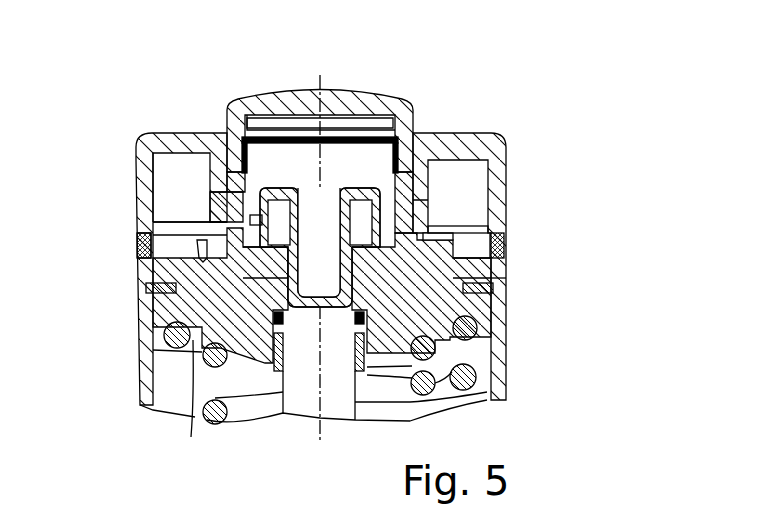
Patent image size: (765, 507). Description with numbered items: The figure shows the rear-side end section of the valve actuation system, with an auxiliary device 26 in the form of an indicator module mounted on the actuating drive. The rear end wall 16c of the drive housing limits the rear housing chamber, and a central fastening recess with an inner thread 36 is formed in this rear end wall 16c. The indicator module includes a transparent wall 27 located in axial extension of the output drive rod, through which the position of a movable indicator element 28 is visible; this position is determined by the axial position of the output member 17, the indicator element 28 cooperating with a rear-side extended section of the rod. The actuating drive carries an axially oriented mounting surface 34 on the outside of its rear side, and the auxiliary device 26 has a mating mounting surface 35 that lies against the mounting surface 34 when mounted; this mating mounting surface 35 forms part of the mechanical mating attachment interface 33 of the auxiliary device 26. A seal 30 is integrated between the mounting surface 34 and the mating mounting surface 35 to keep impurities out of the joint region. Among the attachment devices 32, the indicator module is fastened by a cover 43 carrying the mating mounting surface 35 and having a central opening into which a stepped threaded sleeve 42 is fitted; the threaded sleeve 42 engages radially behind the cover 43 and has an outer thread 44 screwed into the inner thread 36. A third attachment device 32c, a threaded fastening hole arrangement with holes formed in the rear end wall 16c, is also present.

The rear end wall 16c is at (195, 405).
The output member 17 is at (303, 400).
The auxiliary device 26 is at (496, 139).
The transparent wall 27 is at (275, 100).
The indicator element 28 is at (357, 193).
The seal 30 is at (190, 237).
The attachment device 32 is at (497, 320).
The third attachment device 32c is at (143, 297).
The mechanical mating attachment interface 33 is at (203, 257).
The mounting surface 34 is at (483, 226).
The mating mounting surface 35 is at (498, 277).
The inner thread 36 is at (279, 200).
The threaded sleeve 42 is at (263, 222).
The cover 43 is at (147, 180).
The outer thread 44 is at (230, 222).